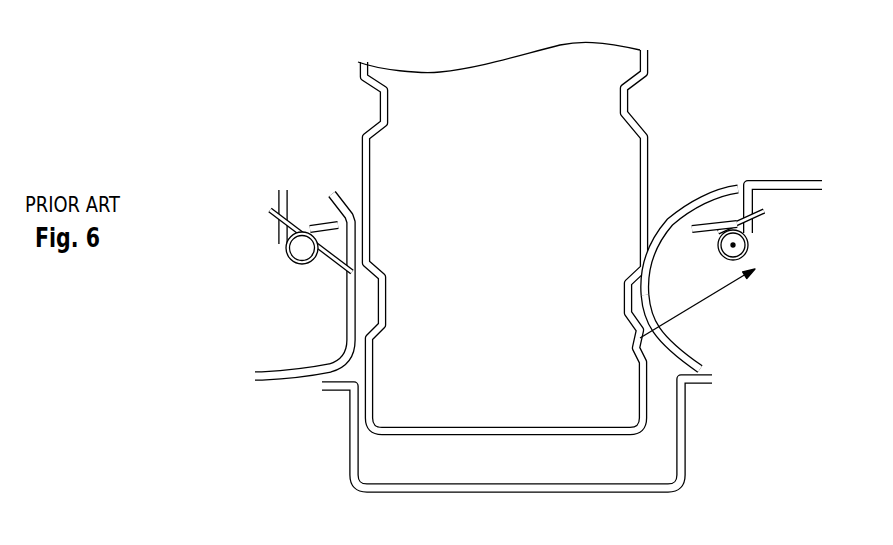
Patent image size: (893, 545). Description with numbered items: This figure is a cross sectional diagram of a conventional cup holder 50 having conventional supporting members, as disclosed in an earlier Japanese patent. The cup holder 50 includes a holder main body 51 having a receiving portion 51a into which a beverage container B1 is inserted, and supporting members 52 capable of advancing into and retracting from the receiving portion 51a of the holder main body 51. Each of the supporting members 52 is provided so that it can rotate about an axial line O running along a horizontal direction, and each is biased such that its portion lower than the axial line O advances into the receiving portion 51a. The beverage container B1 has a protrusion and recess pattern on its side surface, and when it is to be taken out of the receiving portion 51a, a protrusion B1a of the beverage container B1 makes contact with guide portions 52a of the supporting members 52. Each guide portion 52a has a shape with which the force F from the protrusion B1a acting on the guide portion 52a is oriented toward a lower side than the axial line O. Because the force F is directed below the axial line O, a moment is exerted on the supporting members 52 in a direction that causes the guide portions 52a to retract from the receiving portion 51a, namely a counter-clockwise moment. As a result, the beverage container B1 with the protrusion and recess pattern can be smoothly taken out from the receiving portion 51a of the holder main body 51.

The cup holder 50 is at (543, 263).
The holder main body 51 is at (557, 433).
The receiving portion 51a is at (613, 466).
The supporting member 52 is at (543, 247).
The guide portion 52a is at (636, 333).
The beverage container B1 is at (573, 236).
The protrusion B1a is at (660, 342).
The axial line O is at (735, 246).
The force F is at (723, 293).